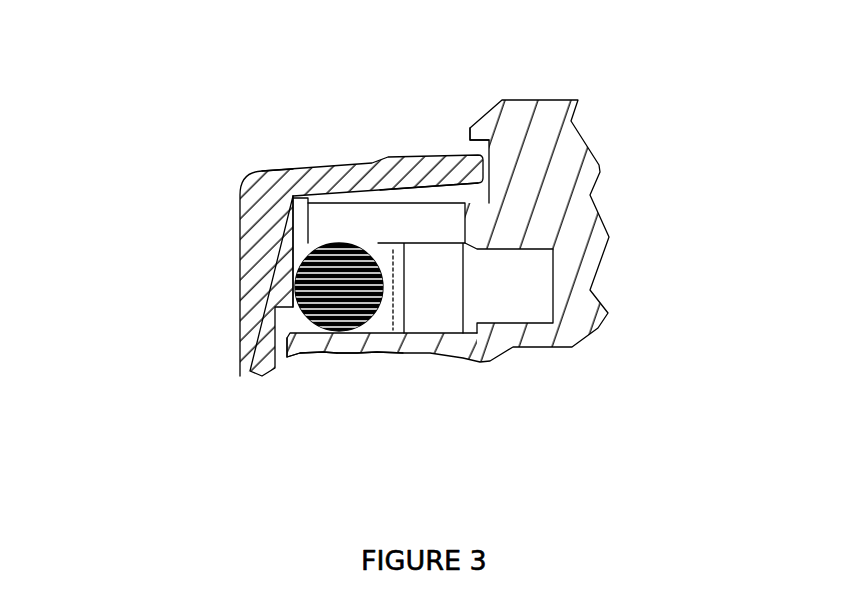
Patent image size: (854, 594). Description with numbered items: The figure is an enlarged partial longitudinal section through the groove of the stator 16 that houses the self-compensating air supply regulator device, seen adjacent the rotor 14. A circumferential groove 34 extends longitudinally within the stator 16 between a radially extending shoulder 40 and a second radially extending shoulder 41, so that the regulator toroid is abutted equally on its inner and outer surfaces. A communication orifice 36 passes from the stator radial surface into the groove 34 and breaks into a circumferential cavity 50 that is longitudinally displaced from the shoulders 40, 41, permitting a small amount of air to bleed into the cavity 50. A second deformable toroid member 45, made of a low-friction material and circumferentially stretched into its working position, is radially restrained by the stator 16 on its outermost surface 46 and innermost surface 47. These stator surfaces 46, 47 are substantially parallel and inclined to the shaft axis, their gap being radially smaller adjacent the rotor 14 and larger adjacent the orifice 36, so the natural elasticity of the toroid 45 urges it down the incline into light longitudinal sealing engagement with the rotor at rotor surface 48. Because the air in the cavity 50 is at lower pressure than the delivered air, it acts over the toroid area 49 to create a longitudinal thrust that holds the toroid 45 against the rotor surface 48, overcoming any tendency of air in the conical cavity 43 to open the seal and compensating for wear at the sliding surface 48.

The rotor 14 is at (253, 308).
The stator 16 is at (572, 192).
The circumferential groove 34 is at (522, 293).
The communication orifice 36 is at (446, 203).
The radially extending shoulder 40 is at (390, 203).
The second radially extending shoulder 41 is at (398, 333).
The conical cavity 43 is at (418, 182).
The second deformable toroid member 45 is at (295, 262).
The outermost stator surface 46 is at (335, 207).
The innermost stator surface 47 is at (340, 335).
The rotor surface 48 is at (295, 275).
The toroid area 49 is at (290, 238).
The circumferential cavity 50 is at (373, 333).